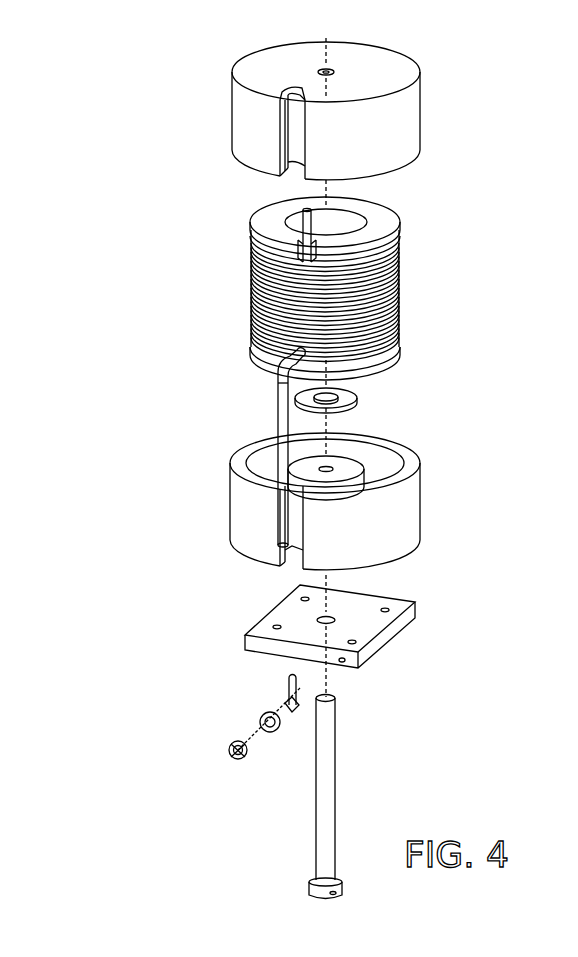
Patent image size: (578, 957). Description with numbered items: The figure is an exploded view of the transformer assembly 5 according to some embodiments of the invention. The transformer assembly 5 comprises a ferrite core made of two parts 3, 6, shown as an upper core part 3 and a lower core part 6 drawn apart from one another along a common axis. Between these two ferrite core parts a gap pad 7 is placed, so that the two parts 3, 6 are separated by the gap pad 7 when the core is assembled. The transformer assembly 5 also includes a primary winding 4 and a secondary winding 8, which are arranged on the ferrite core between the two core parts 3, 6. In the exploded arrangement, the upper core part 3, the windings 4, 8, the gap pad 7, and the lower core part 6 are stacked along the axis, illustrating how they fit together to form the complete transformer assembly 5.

The ferrite core part 3 is at (400, 172).
The primary winding 4 is at (292, 233).
The transformer assembly 5 is at (326, 458).
The ferrite core part 6 is at (420, 503).
The gap pad 7 is at (352, 401).
The secondary winding 8 is at (318, 236).